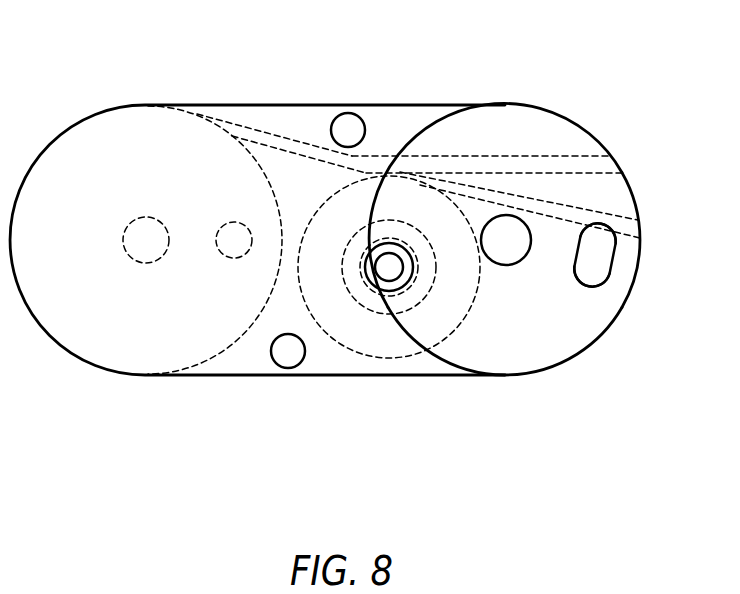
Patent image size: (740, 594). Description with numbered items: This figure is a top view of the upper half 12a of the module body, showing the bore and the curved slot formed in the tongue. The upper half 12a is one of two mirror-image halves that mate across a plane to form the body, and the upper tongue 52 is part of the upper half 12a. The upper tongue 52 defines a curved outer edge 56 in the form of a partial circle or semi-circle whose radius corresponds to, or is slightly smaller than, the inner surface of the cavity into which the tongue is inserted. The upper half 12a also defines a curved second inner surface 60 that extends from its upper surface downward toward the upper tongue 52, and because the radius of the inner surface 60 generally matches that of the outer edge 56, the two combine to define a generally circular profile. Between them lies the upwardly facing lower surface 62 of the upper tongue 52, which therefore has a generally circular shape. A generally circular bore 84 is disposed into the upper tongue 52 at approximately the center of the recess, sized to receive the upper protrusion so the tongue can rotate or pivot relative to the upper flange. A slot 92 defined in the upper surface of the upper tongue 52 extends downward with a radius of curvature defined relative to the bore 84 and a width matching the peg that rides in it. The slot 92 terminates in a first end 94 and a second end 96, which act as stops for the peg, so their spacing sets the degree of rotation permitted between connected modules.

The upper half 12a is at (260, 104).
The upper tongue 52 is at (563, 148).
The curved outer edge 56 is at (643, 238).
The second inner surface 60 is at (410, 148).
The lower surface 62 is at (570, 325).
The bore 84 is at (505, 243).
The slot 92 is at (615, 260).
The first end 94 is at (603, 221).
The second end 96 is at (596, 288).